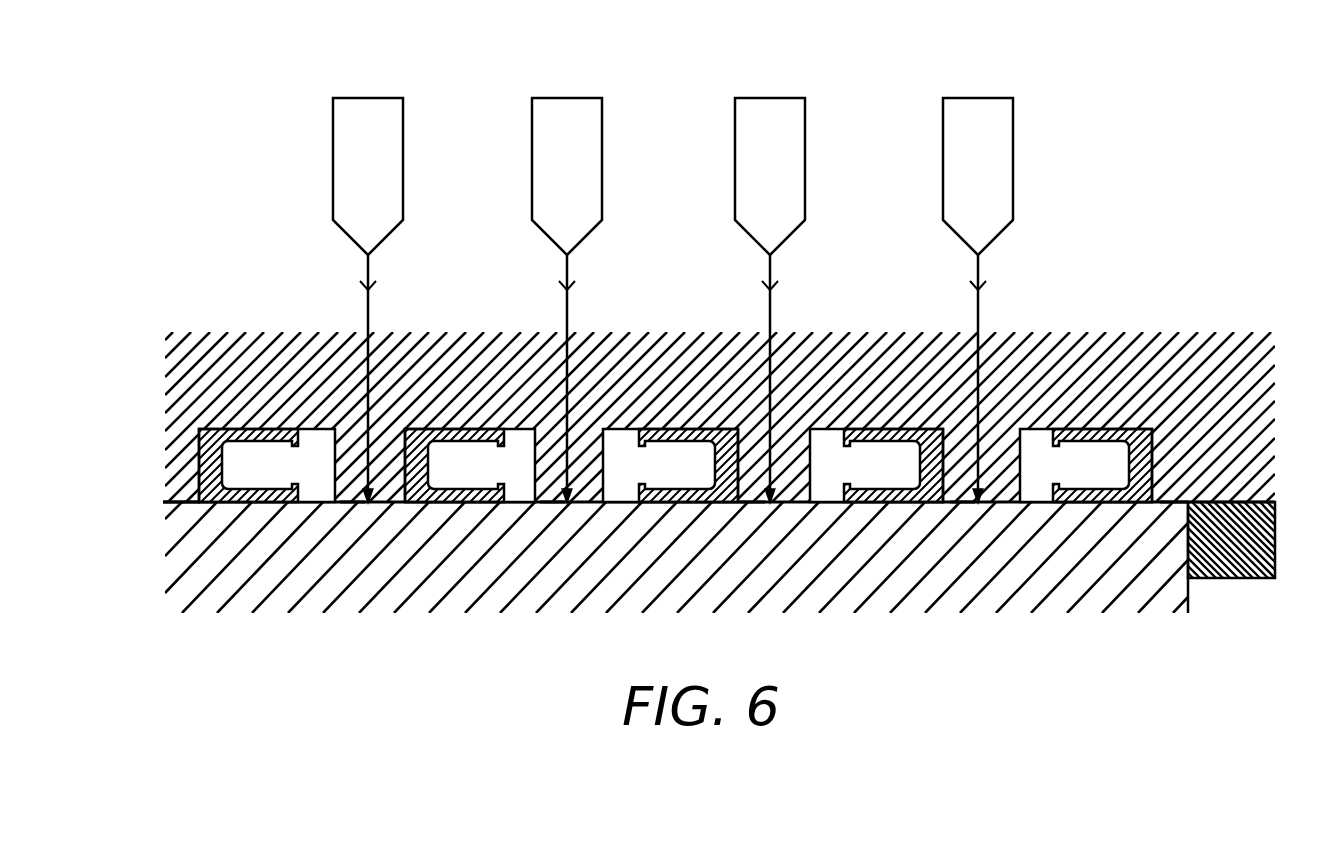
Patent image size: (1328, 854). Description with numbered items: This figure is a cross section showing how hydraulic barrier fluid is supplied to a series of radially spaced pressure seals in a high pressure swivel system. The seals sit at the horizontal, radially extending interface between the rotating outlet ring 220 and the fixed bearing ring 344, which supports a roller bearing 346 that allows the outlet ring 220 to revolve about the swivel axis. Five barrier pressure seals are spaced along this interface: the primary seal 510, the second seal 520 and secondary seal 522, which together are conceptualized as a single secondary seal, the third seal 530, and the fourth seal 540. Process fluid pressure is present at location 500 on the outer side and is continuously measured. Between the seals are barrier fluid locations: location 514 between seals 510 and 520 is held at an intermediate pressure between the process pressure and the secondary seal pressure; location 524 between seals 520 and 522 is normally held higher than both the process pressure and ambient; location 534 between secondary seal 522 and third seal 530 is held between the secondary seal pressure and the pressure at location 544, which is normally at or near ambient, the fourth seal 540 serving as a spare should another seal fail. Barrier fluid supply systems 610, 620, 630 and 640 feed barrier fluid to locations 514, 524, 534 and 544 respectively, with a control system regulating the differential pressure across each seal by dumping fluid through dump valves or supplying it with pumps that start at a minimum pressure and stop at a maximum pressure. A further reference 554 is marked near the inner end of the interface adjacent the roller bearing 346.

The outlet ring 220 is at (707, 377).
The bearing ring 344 is at (737, 595).
The roller bearing 346 is at (1249, 546).
The process fluid pressure location 500 is at (162, 502).
The primary pressure seal 510 is at (281, 478).
The intermediate pressure location 514 is at (353, 506).
The second pressure seal 520 is at (488, 478).
The secondary pressure seal 522 is at (684, 478).
The secondary seal pressure location 524 is at (554, 506).
The third pressure seal 530 is at (904, 478).
The intermediate pressure location 534 is at (753, 506).
The fourth pressure seal 540 is at (1104, 478).
The ambient-side pressure location 544 is at (963, 506).
The fifth interface point 554 is at (1173, 498).
The barrier fluid supply system 610 is at (387, 167).
The barrier fluid supply system 620 is at (586, 167).
The barrier fluid supply system 630 is at (789, 167).
The barrier fluid supply system 640 is at (997, 167).